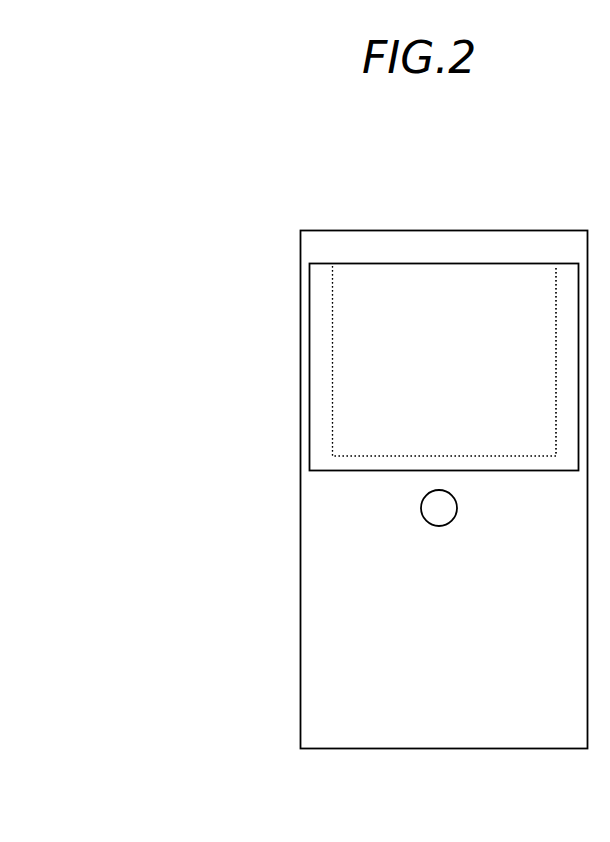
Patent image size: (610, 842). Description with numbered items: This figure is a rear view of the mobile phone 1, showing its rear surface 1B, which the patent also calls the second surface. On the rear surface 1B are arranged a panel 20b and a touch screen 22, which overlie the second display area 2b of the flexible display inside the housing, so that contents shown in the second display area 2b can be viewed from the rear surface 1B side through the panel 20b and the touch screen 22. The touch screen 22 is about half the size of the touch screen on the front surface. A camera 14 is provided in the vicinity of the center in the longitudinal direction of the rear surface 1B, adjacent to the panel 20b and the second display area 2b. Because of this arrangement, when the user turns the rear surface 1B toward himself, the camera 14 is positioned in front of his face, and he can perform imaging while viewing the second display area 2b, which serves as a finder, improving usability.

The mobile phone 1 is at (307, 153).
The rear surface 1B is at (315, 713).
The second display area 2b is at (355, 396).
The panel 20b is at (332, 298).
The touch screen 22 is at (445, 361).
The camera 14 is at (420, 508).